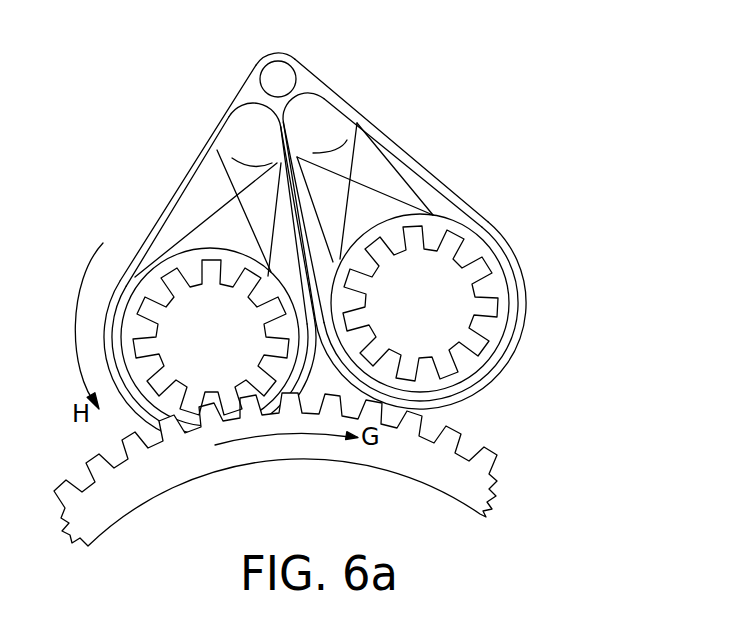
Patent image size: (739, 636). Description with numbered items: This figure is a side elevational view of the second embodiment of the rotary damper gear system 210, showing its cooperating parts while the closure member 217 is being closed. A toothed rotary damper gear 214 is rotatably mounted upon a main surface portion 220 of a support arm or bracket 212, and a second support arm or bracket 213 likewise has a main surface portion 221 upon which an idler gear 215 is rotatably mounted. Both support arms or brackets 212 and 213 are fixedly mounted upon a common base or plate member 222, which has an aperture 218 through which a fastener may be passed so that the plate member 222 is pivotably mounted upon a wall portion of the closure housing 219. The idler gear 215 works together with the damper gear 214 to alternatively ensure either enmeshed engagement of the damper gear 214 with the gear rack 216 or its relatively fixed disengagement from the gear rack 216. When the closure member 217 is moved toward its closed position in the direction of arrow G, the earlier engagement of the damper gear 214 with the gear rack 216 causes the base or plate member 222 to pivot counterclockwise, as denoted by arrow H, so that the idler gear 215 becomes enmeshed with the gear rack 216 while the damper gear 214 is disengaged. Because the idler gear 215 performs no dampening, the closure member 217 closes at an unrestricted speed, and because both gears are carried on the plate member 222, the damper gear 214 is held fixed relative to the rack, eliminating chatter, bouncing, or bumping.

The rotary damper gear system 210 is at (522, 102).
The support arm or bracket 212 is at (464, 192).
The second support arm or bracket 213 is at (188, 177).
The toothed rotary damper gear 214 is at (452, 298).
The idler gear 215 is at (183, 317).
The gear rack 216 is at (420, 467).
The closure member 217 is at (323, 503).
The aperture 218 is at (288, 77).
The closure housing 219 is at (420, 108).
The main surface portion 220 is at (490, 243).
The main surface portion 221 is at (190, 262).
The base or plate member 222 is at (310, 78).